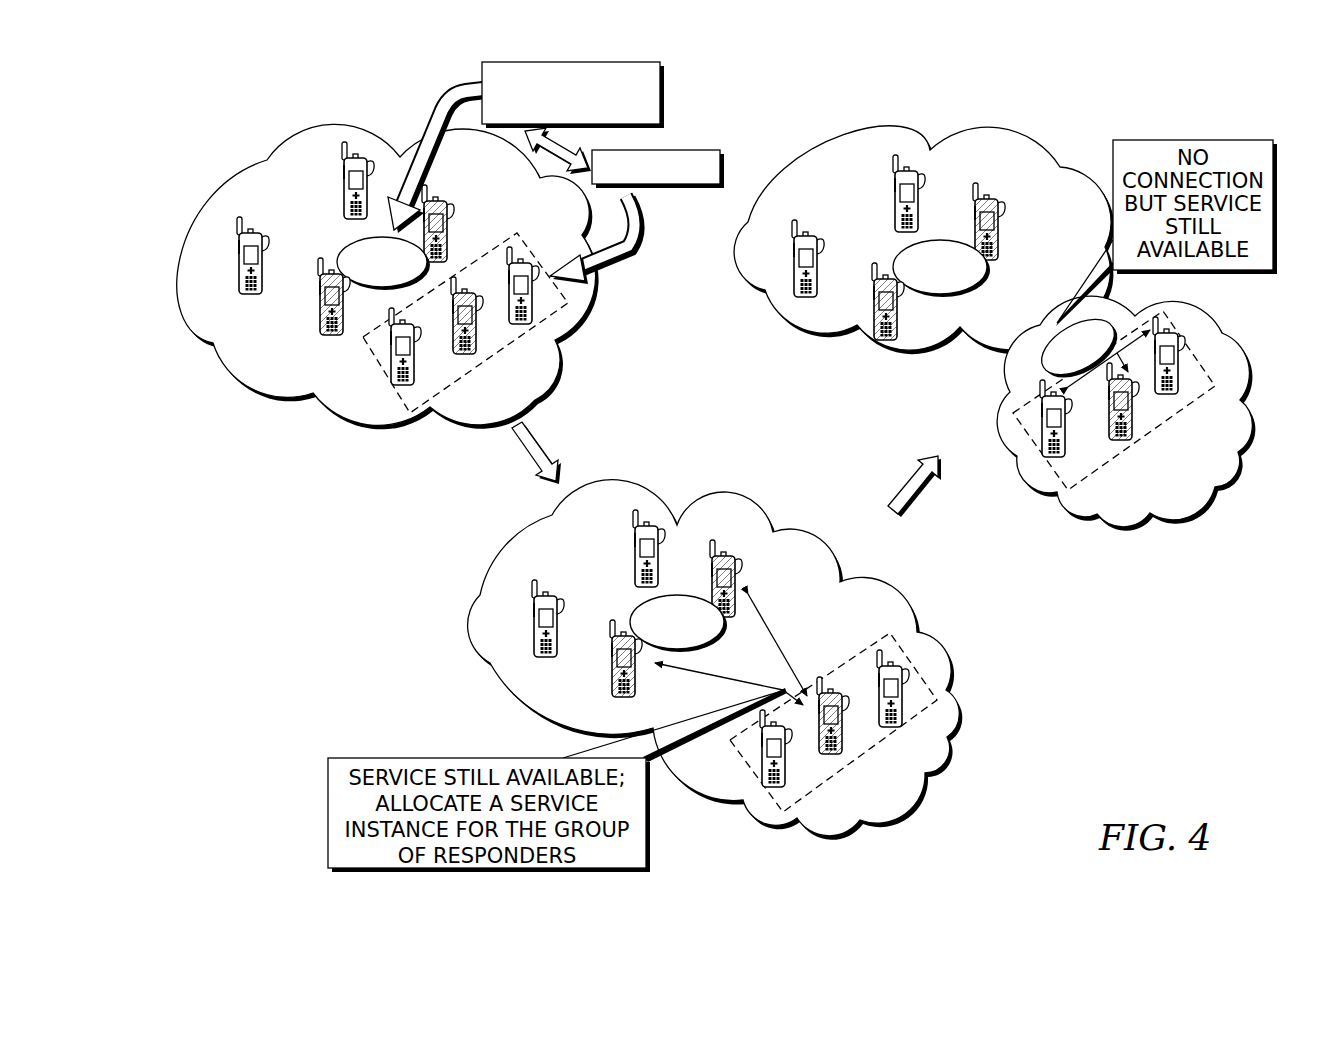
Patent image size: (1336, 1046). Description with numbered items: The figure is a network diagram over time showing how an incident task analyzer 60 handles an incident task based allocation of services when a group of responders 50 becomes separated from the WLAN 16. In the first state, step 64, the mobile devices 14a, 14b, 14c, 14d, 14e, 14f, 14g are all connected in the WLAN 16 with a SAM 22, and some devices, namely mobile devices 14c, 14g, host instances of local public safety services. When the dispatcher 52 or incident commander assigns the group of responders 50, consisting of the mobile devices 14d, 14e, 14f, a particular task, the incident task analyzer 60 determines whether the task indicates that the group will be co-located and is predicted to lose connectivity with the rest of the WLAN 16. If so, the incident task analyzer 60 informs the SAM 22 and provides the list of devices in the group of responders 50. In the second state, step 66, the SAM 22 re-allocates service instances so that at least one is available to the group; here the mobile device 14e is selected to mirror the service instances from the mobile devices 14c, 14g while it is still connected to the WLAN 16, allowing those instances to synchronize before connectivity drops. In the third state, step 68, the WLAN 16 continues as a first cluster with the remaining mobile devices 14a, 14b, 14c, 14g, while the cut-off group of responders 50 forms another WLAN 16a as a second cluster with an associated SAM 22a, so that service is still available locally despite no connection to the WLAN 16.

The mobile device 14a is at (240, 265).
The mobile device 14b is at (357, 152).
The mobile device 14c is at (432, 190).
The mobile device 14d is at (522, 250).
The mobile device 14e is at (466, 356).
The mobile device 14f is at (399, 388).
The mobile device 14g is at (325, 322).
The WLAN 16 is at (322, 130).
The WLAN 16a is at (1202, 522).
The SAM 22 is at (358, 245).
The SAM 22a is at (1045, 355).
The group of responders 50 is at (372, 362).
The dispatcher 52 is at (688, 150).
The incident task analyzer 60 is at (661, 78).
The step 64 is at (268, 110).
The step 66 is at (652, 447).
The step 68 is at (875, 103).